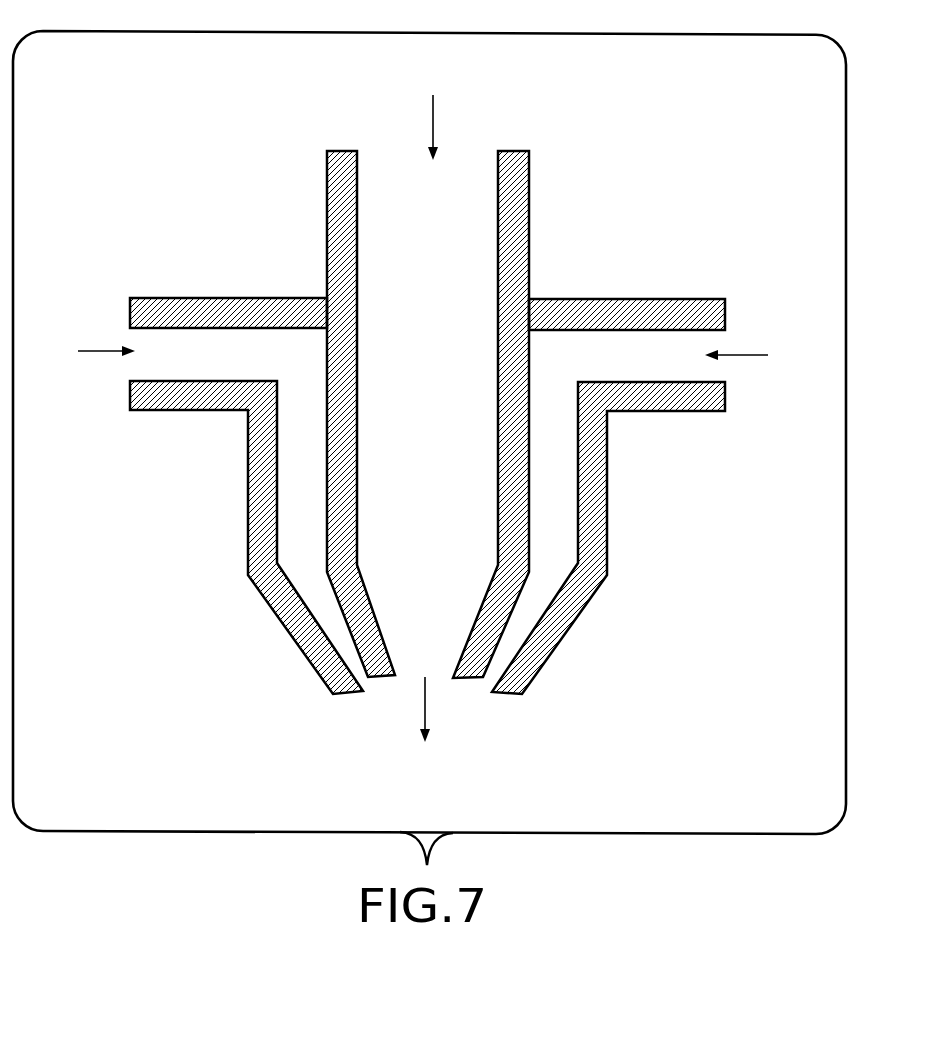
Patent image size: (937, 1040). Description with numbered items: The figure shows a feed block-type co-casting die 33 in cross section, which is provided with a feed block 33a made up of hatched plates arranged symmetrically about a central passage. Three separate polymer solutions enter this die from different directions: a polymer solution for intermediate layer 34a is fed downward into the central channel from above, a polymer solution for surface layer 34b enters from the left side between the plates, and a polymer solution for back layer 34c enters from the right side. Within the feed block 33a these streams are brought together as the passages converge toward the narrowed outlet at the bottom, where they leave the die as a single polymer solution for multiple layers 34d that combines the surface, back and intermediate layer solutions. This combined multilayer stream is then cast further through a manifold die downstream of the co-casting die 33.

The feed block-type co-casting die 33 is at (582, 170).
The feed block 33a is at (655, 298).
The polymer solution for intermediate layer 34a is at (435, 111).
The polymer solution for surface layer 34b is at (78, 354).
The polymer solution for back layer 34c is at (763, 359).
The polymer solution for multiple layers 34d is at (431, 729).